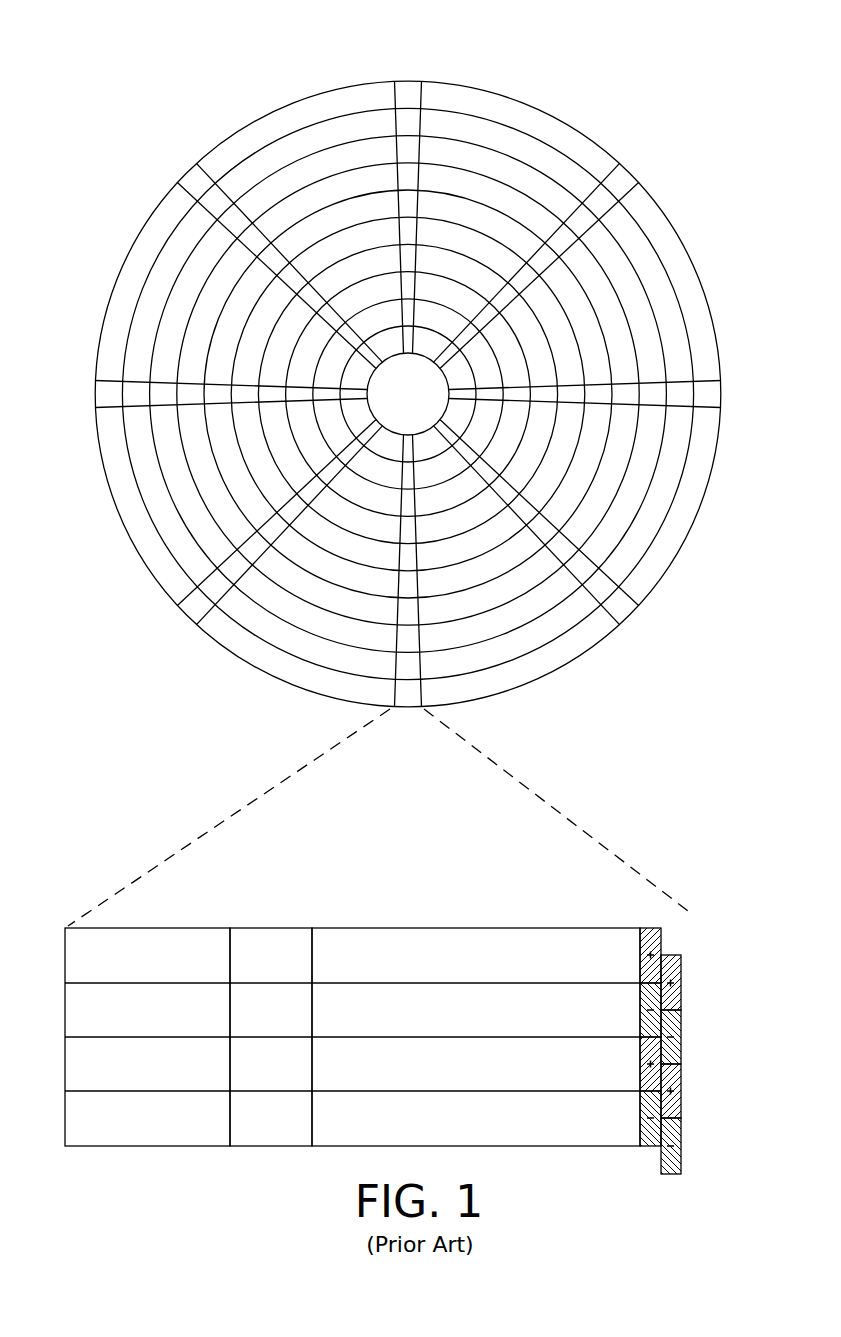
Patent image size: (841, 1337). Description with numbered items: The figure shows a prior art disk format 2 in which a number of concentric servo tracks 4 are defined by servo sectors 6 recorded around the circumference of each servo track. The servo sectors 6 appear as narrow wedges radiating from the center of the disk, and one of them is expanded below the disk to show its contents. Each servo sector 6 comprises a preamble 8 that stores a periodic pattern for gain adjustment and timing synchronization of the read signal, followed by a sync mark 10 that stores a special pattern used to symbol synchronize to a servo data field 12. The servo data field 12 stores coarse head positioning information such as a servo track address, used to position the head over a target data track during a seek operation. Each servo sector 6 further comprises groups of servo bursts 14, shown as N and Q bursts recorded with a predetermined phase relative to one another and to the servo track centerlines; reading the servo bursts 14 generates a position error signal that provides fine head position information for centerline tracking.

The disk format 2 is at (176, 86).
The servo tracks 4 is at (514, 146).
The servo sectors 6 is at (270, 784).
The preamble 8 is at (155, 928).
The sync mark 10 is at (273, 928).
The servo data field 12 is at (467, 928).
The servo bursts 14 is at (676, 928).